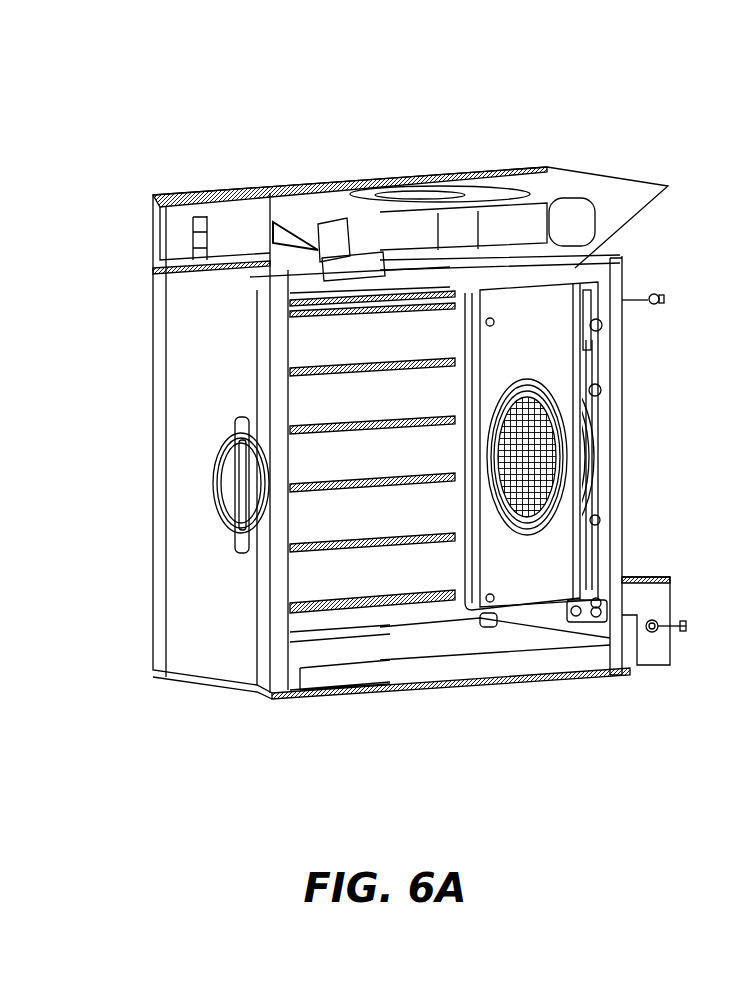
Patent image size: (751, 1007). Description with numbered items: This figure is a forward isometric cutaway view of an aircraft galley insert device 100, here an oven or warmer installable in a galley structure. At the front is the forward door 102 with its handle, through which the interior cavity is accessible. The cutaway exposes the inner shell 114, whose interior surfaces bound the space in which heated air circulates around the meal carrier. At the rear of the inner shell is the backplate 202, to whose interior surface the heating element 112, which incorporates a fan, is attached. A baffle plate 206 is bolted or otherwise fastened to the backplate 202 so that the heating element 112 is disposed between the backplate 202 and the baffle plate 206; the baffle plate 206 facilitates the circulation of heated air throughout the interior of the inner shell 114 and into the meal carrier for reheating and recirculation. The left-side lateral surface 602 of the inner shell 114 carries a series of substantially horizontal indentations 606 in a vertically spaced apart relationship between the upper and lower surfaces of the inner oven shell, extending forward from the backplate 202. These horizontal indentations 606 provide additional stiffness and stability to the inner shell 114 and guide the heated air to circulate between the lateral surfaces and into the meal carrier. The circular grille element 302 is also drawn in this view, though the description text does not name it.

The aircraft galley insert device 100 is at (108, 70).
The forward door 102 is at (188, 582).
The heating element 112 is at (588, 460).
The inner shell 114 is at (365, 583).
The backplate 202 is at (588, 552).
The baffle plate 206 is at (513, 342).
The fan grill 302 is at (523, 407).
The left-side lateral surface 602 is at (402, 510).
The horizontal indentations 606 is at (367, 418).